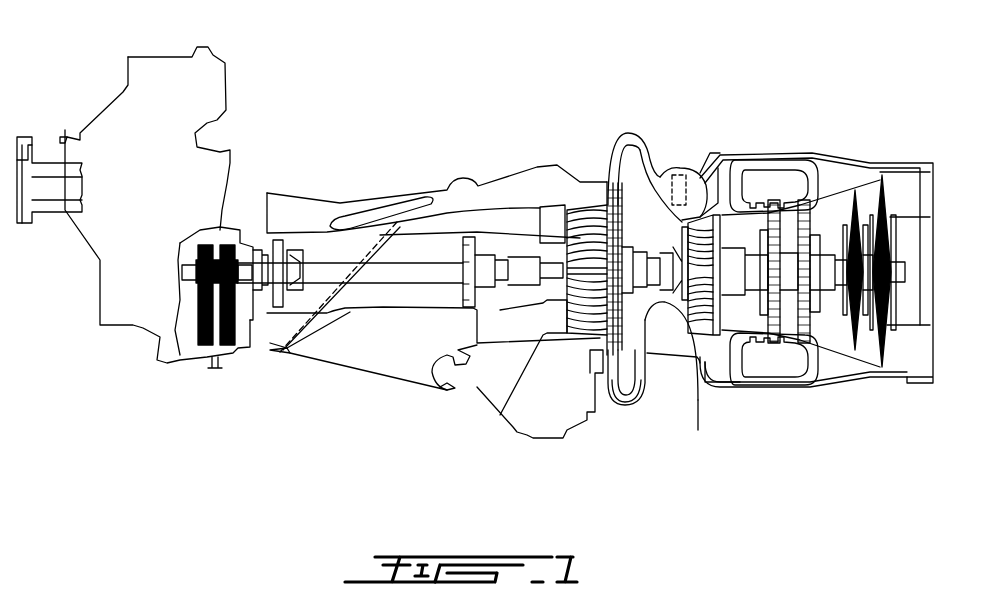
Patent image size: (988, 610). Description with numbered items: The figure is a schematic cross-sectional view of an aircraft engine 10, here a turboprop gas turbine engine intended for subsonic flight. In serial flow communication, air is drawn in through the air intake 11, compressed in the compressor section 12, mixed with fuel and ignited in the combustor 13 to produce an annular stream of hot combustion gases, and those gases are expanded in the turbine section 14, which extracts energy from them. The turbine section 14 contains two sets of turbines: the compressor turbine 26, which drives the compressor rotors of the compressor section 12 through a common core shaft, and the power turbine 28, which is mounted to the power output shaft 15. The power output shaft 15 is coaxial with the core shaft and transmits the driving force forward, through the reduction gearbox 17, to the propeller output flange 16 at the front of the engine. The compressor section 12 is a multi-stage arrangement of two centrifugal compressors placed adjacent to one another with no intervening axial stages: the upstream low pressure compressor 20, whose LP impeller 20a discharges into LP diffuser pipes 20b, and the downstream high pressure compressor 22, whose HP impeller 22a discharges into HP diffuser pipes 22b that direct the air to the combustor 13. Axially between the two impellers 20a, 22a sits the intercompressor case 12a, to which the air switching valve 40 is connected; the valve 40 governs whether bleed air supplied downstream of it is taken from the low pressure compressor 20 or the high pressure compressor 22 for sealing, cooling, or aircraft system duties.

The aircraft engine 10 is at (417, 105).
The air intake 11 is at (390, 355).
The compressor section 12 is at (613, 327).
The intercompressor case 12a is at (657, 160).
The combustor 13 is at (788, 178).
The turbine section 14 is at (890, 403).
The power output shaft 15 is at (403, 267).
The propeller output flange 16 is at (47, 140).
The reduction gearbox 17 is at (228, 382).
The low pressure centrifugal compressor 20 is at (602, 398).
The LP impeller 20a is at (583, 333).
The LP diffuser pipes 20b is at (622, 405).
The high pressure centrifugal compressor 22 is at (716, 400).
The HP impeller 22a is at (700, 430).
The HP diffuser pipes 22b is at (740, 383).
The compressor turbine 26 is at (812, 210).
The power turbine 28 is at (890, 197).
The air switching valve 40 is at (688, 173).